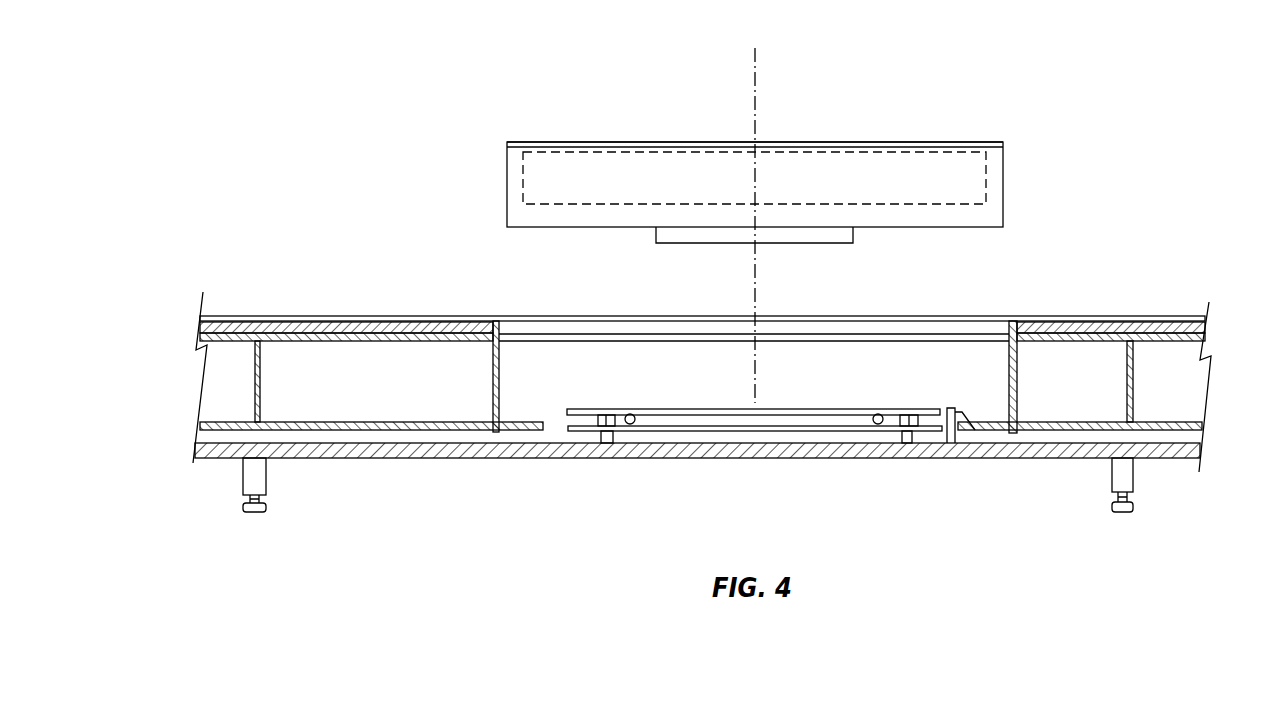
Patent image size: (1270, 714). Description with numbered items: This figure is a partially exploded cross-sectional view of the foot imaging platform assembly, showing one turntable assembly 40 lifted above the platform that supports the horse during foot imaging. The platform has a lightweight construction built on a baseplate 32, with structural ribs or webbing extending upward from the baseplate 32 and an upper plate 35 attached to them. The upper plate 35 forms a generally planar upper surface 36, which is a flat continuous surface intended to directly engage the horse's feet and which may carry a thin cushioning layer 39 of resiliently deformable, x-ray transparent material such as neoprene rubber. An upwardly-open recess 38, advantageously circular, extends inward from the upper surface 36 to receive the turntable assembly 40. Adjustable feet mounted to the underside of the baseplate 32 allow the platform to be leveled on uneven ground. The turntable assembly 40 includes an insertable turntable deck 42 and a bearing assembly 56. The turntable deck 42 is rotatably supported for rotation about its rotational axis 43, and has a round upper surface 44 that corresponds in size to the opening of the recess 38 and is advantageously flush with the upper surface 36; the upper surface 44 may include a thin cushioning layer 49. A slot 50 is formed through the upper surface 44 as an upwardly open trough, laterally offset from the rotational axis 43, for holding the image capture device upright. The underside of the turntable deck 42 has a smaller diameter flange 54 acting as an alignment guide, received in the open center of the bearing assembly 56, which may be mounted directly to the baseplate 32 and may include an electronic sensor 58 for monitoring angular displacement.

The baseplate 32 is at (500, 450).
The upper plate 35 is at (210, 330).
The upper surface 36 is at (390, 316).
The recess 38 is at (953, 373).
The cushioning layer 39 is at (198, 318).
The turntable assembly 40 is at (790, 163).
The turntable deck 42 is at (893, 167).
The rotational axis 43 is at (752, 73).
The upper surface 44 is at (568, 142).
The cushioning layer 49 is at (620, 142).
The slot 50 is at (990, 171).
The flange 54 is at (826, 244).
The bearing assembly 56 is at (628, 400).
The electronic sensor 58 is at (958, 418).